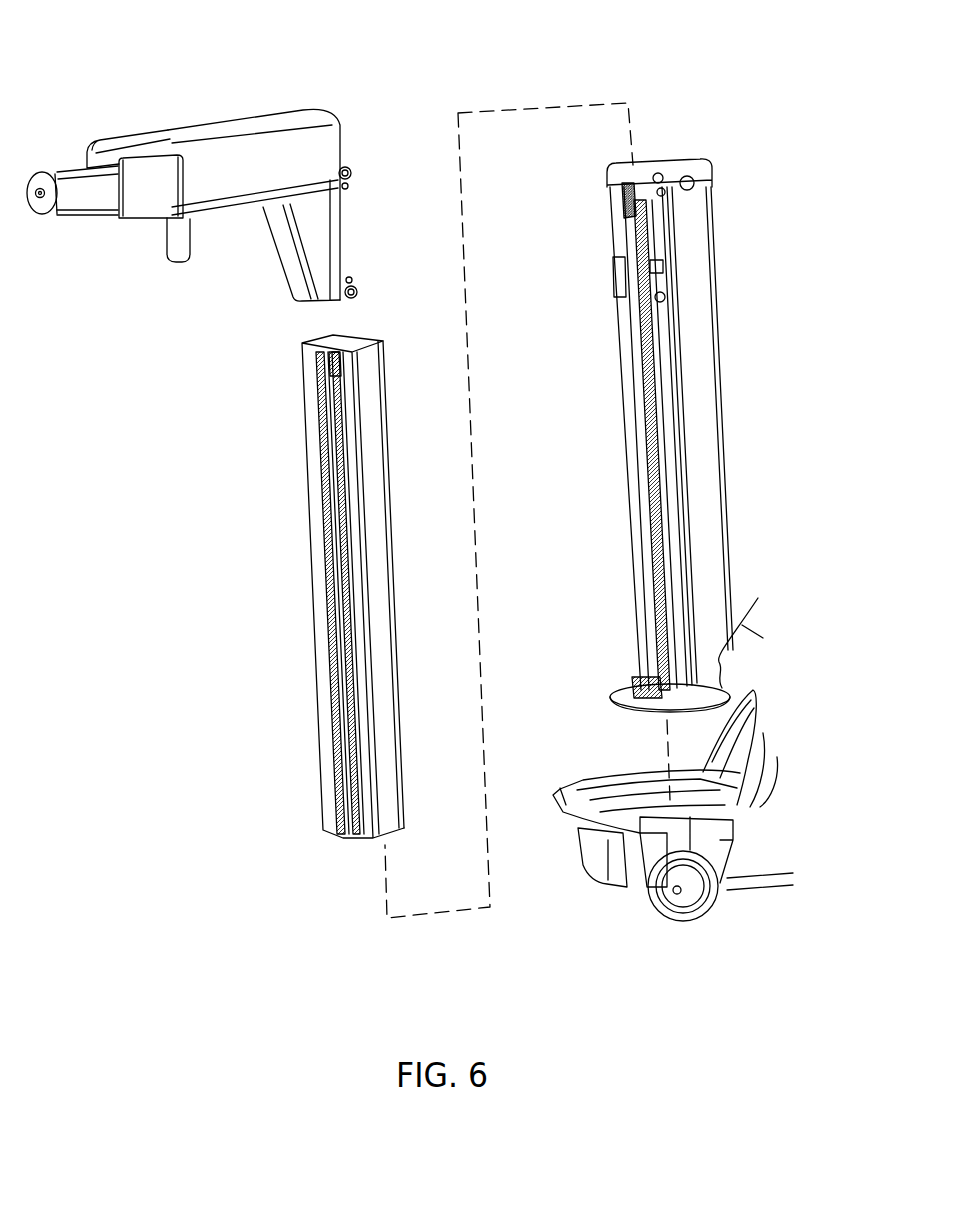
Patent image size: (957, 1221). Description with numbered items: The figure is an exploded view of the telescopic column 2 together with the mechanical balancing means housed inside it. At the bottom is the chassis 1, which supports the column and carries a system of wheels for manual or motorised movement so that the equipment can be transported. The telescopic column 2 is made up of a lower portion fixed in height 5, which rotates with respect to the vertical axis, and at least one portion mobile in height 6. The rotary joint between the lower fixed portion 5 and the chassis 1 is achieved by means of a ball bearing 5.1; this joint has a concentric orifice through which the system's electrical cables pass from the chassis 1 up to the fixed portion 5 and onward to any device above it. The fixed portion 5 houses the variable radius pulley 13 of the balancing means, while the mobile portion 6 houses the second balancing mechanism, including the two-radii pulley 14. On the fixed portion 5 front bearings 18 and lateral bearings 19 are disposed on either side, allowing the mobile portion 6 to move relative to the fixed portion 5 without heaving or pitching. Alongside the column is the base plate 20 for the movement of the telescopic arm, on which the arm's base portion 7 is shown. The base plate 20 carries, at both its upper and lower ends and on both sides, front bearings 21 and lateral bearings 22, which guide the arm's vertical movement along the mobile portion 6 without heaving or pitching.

The chassis 1 is at (752, 912).
The telescopic column 2 is at (253, 603).
The lower portion fixed in height 5 is at (752, 467).
The ball bearing 5.1 is at (648, 692).
The portion mobile in height 6 is at (372, 558).
The base portion 7 is at (210, 100).
The variable radius pulley 13 is at (623, 200).
The two-radii pulley 14 is at (333, 380).
The front bearings 18 is at (663, 180).
The lateral bearings 19 is at (665, 193).
The base plate 20 is at (360, 250).
The front bearings 21 is at (352, 168).
The lateral bearings 22 is at (349, 189).